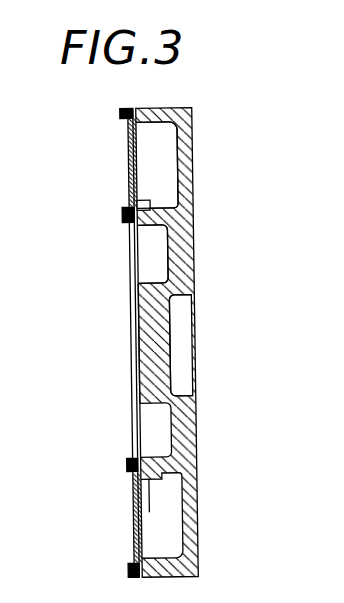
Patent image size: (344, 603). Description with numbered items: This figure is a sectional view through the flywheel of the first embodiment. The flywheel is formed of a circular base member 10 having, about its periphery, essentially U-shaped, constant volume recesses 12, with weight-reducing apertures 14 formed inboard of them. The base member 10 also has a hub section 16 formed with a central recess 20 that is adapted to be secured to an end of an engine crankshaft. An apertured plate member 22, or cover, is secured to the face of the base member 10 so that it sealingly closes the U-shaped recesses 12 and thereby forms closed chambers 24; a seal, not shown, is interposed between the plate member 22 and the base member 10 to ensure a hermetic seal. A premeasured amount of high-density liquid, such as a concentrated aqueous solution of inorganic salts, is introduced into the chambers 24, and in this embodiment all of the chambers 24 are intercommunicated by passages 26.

The circular base member 10 is at (193, 260).
The U-shaped constant volume recesses 12 is at (131, 160).
The weight-reducing apertures 14 is at (152, 261).
The hub section 16 is at (155, 341).
The central recess 20 is at (180, 328).
The apertured plate member 22 is at (133, 523).
The closed chambers 24 is at (143, 143).
The passages 26 is at (124, 212).